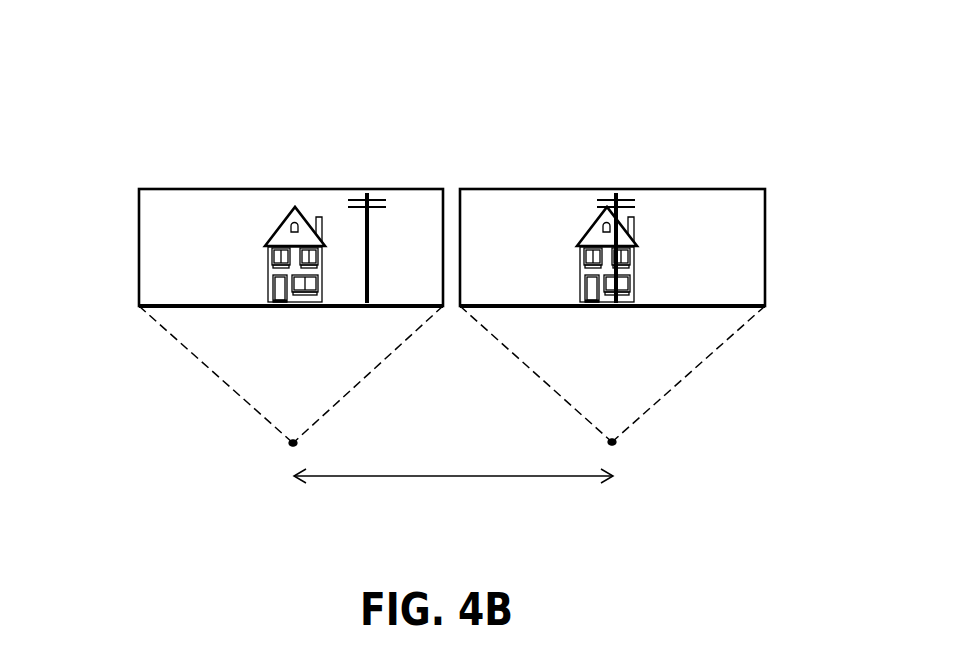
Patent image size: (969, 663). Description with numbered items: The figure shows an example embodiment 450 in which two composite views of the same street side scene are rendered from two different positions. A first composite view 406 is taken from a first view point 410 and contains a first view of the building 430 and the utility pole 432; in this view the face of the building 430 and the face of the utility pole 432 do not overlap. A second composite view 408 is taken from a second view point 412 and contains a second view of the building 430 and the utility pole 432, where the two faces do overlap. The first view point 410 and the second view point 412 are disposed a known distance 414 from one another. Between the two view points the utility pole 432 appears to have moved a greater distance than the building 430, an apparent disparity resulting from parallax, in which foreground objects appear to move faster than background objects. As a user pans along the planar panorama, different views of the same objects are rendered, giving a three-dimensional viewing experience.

The example embodiment 450 is at (173, 76).
The first composite view 406 is at (137, 250).
The second composite view 408 is at (765, 247).
The building 430 is at (280, 225).
The utility pole 432 is at (367, 194).
The first view point 410 is at (287, 448).
The second view point 412 is at (618, 447).
The known distance 414 is at (450, 477).